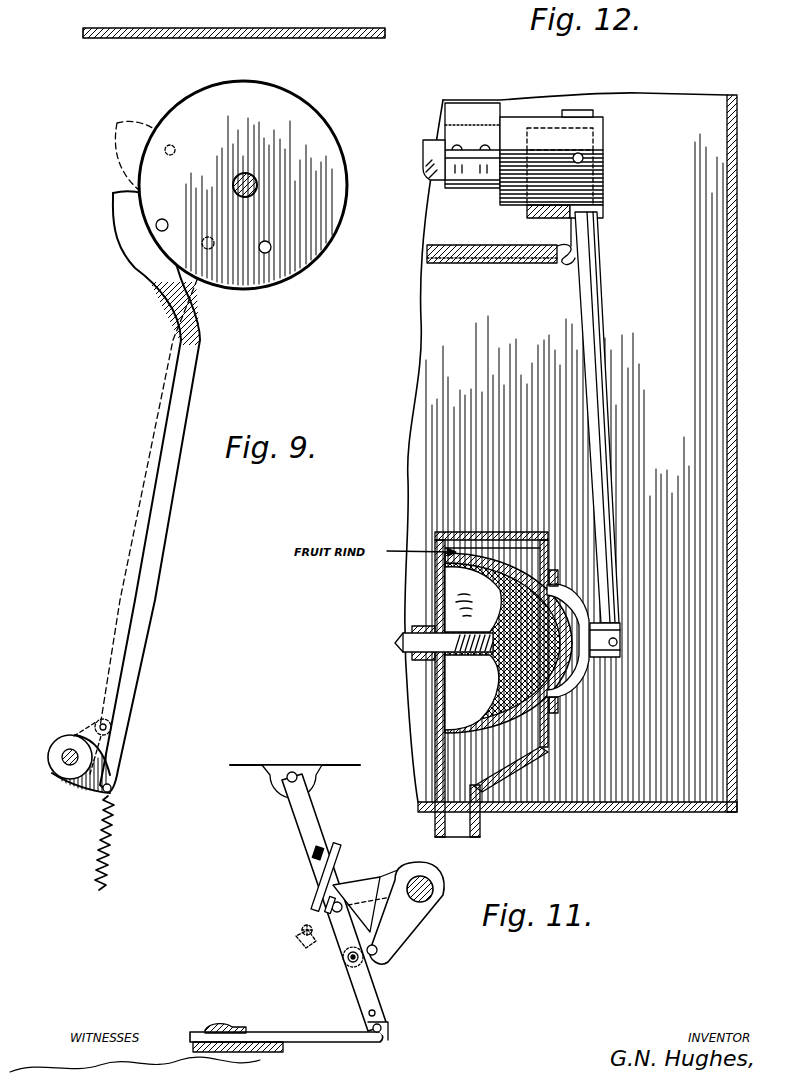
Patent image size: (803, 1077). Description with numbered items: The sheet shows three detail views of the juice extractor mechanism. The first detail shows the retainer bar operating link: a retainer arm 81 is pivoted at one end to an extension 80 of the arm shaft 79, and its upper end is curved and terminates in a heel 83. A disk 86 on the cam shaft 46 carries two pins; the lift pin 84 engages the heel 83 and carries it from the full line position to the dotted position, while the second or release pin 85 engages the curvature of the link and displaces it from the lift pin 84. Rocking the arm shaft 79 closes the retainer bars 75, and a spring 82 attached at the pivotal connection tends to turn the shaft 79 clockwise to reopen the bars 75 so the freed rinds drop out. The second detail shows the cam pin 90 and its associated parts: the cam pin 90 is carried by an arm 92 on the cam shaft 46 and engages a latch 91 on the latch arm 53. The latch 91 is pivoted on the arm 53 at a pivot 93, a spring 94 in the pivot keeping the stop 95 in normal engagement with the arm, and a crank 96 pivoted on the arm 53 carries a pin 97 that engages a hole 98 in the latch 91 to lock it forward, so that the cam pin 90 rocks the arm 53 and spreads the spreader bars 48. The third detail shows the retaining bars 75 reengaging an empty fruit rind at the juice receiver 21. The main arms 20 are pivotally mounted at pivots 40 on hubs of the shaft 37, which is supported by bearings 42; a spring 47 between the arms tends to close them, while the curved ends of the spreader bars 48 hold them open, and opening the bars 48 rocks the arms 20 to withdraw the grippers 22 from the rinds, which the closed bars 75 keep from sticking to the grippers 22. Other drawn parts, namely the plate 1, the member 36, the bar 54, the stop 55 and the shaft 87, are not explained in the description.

In FIG. 12, the supporting plate 1 is at (740, 697).
In FIG. 12, the main arms 20 is at (607, 306).
In FIG. 12, the juice receiver 21 is at (492, 525).
In FIG. 12, the grippers 22 is at (591, 683).
In FIG. 12, the cap 36 is at (604, 124).
In FIG. 12, the shaft 37 is at (430, 182).
In FIG. 12, the pivots 40 is at (584, 158).
In FIG. 12, the bearings 42 is at (465, 141).
In FIG. 12, the cam shaft 46 is at (545, 219).
In FIG. 9, the cam shaft 46 is at (258, 185).
In FIG. 11, the cam shaft 46 is at (418, 882).
In FIG. 12, the spring 47 is at (476, 265).
In FIG. 12, the spreader bars 48 is at (566, 254).
In FIG. 11, the latch arm 53 is at (305, 820).
In FIG. 11, the bar 54 is at (342, 1040).
In FIG. 11, the stop 55 is at (208, 1029).
In FIG. 12, the retainer bars 75 is at (558, 578).
In FIG. 9, the arm shaft 79 is at (62, 766).
In FIG. 9, the extension 80 is at (93, 790).
In FIG. 9, the retainer arm 81 is at (165, 492).
In FIG. 9, the spring 82 is at (100, 848).
In FIG. 9, the heel 83 is at (160, 207).
In FIG. 9, the lift pin 84 is at (158, 229).
In FIG. 9, the release pin 85 is at (270, 252).
In FIG. 9, the disk 86 is at (347, 232).
In FIG. 12, the shaft 87 is at (419, 650).
In FIG. 11, the cam pin 90 is at (378, 954).
In FIG. 11, the latch 91 is at (370, 882).
In FIG. 11, the arm 92 is at (446, 885).
In FIG. 11, the pivot 93 is at (352, 962).
In FIG. 11, the spring 94 is at (348, 958).
In FIG. 11, the stop 95 is at (328, 902).
In FIG. 11, the crank 96 is at (314, 853).
In FIG. 11, the pin 97 is at (332, 906).
In FIG. 11, the hole 98 is at (300, 930).